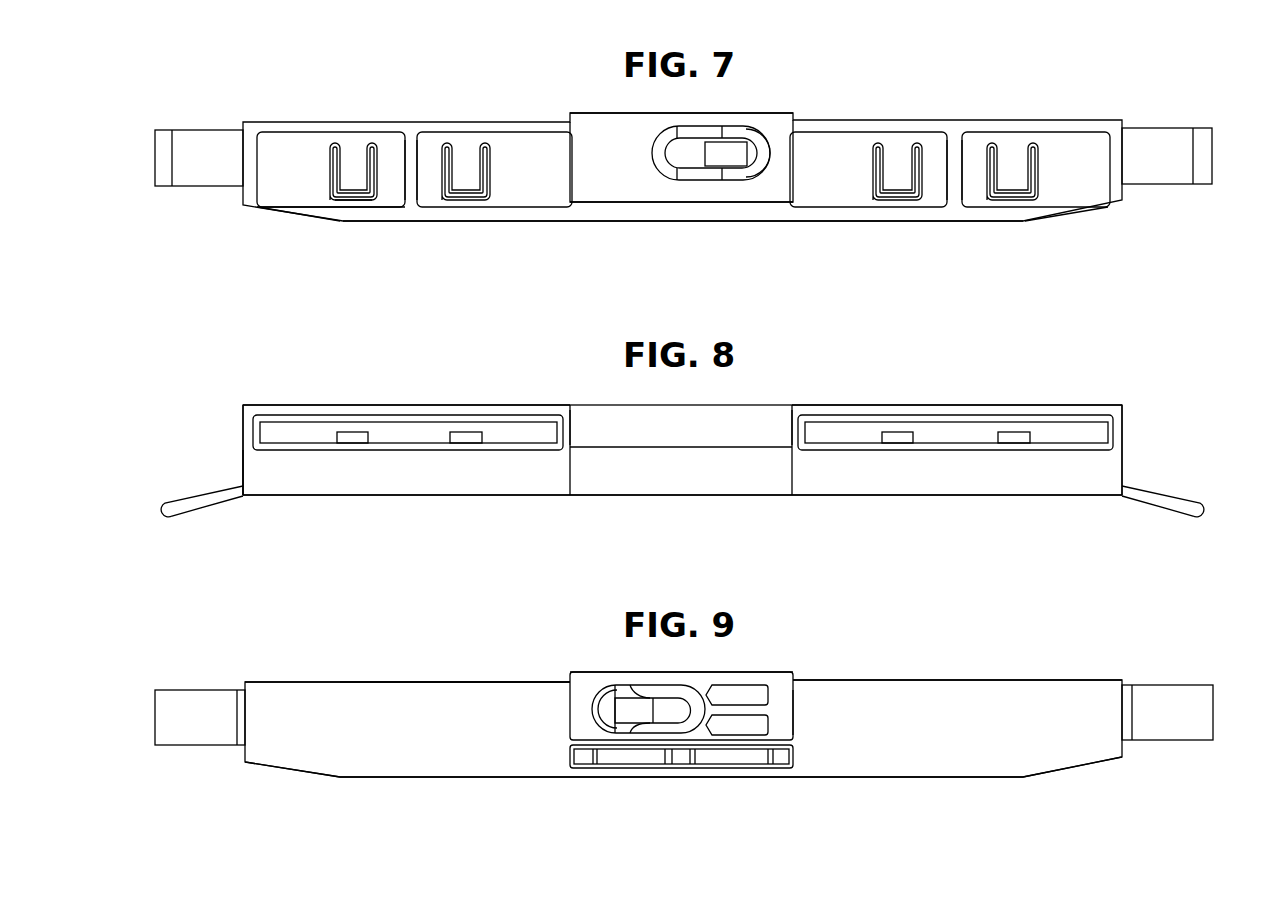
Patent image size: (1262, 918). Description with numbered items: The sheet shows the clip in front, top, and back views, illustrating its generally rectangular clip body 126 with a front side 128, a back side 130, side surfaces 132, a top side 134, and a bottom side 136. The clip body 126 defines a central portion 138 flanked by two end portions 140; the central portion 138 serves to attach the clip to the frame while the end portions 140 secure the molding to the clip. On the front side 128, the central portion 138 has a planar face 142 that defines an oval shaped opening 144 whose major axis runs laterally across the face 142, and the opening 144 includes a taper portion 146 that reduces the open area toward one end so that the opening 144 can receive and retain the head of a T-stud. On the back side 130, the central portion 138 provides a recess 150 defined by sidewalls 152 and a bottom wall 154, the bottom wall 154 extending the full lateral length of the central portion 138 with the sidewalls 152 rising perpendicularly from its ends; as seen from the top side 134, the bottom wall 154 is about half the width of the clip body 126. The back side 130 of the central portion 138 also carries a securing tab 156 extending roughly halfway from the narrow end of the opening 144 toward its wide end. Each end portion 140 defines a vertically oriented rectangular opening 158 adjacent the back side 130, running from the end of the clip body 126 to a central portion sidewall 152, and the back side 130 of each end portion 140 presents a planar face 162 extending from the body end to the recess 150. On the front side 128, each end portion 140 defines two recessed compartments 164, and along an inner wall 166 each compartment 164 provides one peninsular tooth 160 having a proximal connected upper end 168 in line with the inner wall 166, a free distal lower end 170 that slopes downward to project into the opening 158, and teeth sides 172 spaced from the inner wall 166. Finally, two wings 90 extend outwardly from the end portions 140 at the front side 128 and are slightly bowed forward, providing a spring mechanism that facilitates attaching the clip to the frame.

In FIG. 7, the wing 90 is at (193, 162).
In FIG. 8, the wing 90 is at (1261, 528).
In FIG. 9, the wing 90 is at (186, 697).
In FIG. 7, the clip body 126 is at (170, 105).
In FIG. 8, the clip body 126 is at (272, 403).
In FIG. 9, the clip body 126 is at (270, 682).
In FIG. 7, the front side 128 is at (617, 187).
In FIG. 9, the back side 130 is at (375, 760).
In FIG. 7, the side surfaces 132 is at (235, 195).
In FIG. 8, the side surfaces 132 is at (243, 450).
In FIG. 9, the side surfaces 132 is at (240, 755).
In FIG. 8, the top side 134 is at (558, 487).
In FIG. 9, the top side 134 is at (455, 680).
In FIG. 9, the bottom side 136 is at (622, 780).
In FIG. 7, the central portion 138 is at (683, 227).
In FIG. 8, the central portion 138 is at (626, 506).
In FIG. 9, the central portion 138 is at (587, 649).
In FIG. 8, the end portion 140 is at (380, 513).
In FIG. 9, the end portion 140 is at (326, 667).
In FIG. 7, the planar face 142 is at (605, 118).
In FIG. 7, the oval shaped opening 144 is at (754, 175).
In FIG. 7, the taper portion 146 is at (700, 137).
In FIG. 8, the recess 150 is at (606, 424).
In FIG. 9, the recess 150 is at (783, 662).
In FIG. 8, the sidewalls 152 is at (572, 422).
In FIG. 9, the sidewalls 152 is at (793, 717).
In FIG. 8, the bottom wall 154 is at (698, 430).
In FIG. 9, the bottom wall 154 is at (735, 728).
In FIG. 9, the securing tab 156 is at (628, 710).
In FIG. 8, the opening 158 is at (412, 430).
In FIG. 7, the peninsular teeth 160 is at (353, 156).
In FIG. 8, the peninsular teeth 160 is at (352, 432).
In FIG. 8, the planar face 162 is at (305, 478).
In FIG. 7, the recessed compartment 164 is at (438, 106).
In FIG. 7, the inner wall 166 is at (277, 148).
In FIG. 7, the proximal connected upper end 168 is at (356, 158).
In FIG. 7, the free distal lower end 170 is at (347, 183).
In FIG. 7, the teeth sides 172 is at (373, 172).